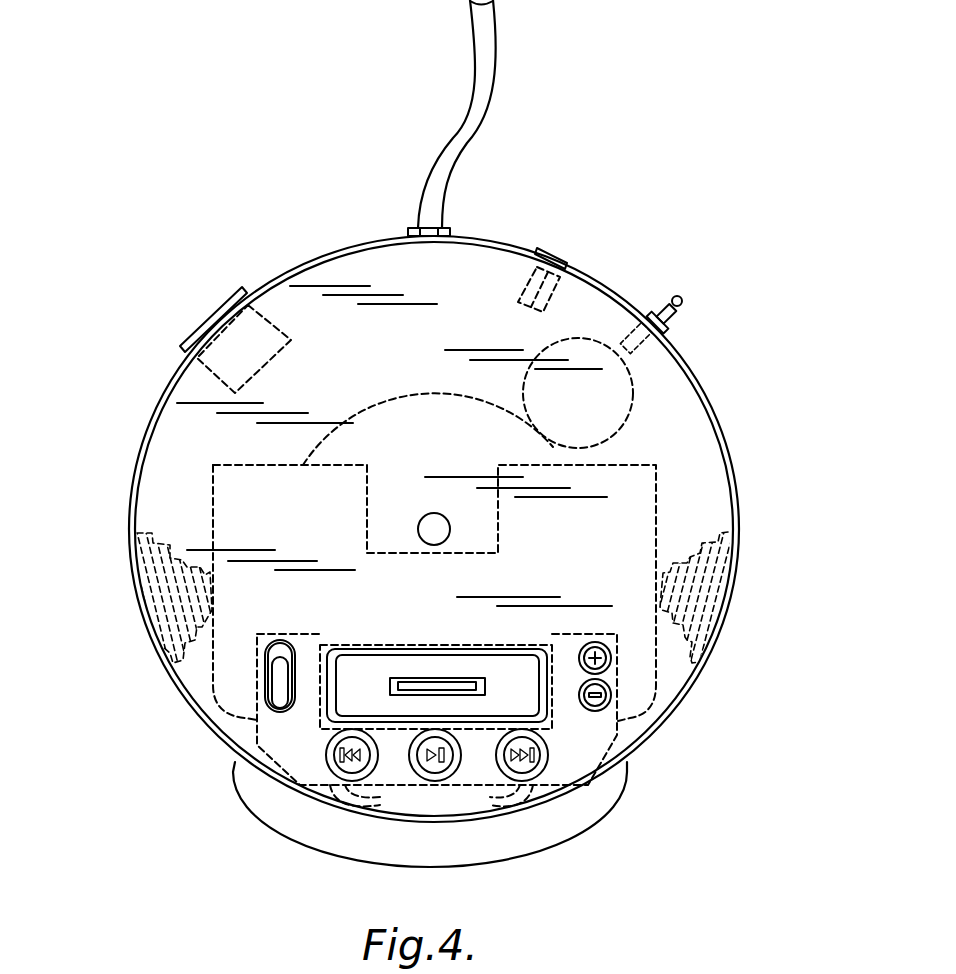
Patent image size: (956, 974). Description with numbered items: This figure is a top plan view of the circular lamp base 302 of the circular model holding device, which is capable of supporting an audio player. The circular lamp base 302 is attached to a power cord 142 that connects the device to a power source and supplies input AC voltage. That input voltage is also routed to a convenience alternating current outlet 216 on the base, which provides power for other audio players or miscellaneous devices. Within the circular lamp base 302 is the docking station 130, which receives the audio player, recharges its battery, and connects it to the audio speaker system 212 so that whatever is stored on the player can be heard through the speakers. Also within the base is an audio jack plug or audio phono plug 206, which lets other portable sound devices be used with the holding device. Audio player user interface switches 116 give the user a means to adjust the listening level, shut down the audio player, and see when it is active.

The circular lamp base 302 is at (273, 178).
The power cord 142 is at (483, 103).
The convenience alternating current (AC) outlet 216 is at (212, 320).
The audio jack plug or audio phono plug 206 is at (668, 296).
The audio speaker system 212 is at (250, 748).
The docking station 130 is at (485, 685).
The audio player user interface switches 116 is at (248, 808).